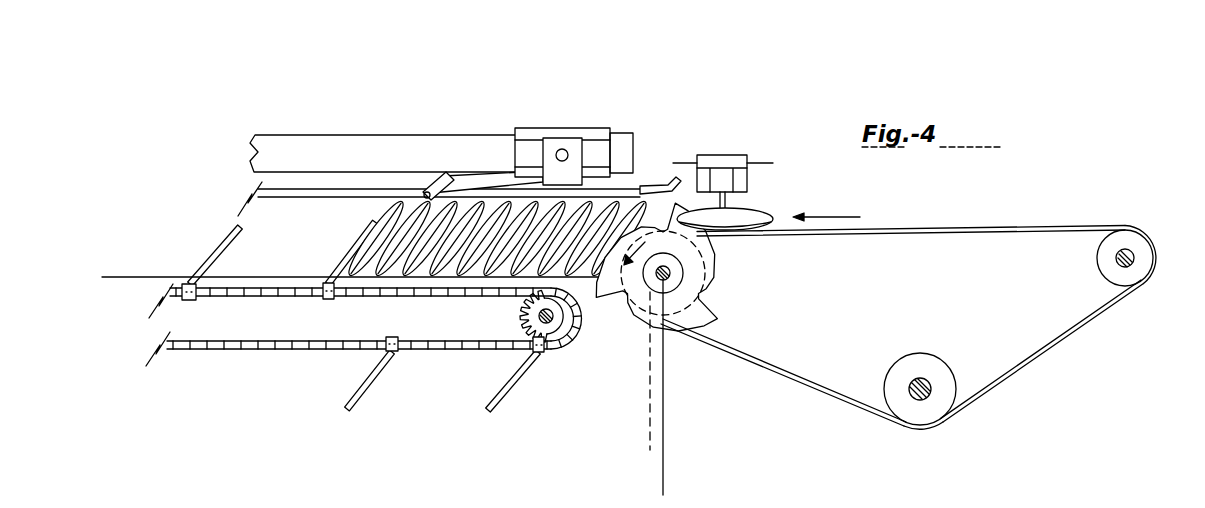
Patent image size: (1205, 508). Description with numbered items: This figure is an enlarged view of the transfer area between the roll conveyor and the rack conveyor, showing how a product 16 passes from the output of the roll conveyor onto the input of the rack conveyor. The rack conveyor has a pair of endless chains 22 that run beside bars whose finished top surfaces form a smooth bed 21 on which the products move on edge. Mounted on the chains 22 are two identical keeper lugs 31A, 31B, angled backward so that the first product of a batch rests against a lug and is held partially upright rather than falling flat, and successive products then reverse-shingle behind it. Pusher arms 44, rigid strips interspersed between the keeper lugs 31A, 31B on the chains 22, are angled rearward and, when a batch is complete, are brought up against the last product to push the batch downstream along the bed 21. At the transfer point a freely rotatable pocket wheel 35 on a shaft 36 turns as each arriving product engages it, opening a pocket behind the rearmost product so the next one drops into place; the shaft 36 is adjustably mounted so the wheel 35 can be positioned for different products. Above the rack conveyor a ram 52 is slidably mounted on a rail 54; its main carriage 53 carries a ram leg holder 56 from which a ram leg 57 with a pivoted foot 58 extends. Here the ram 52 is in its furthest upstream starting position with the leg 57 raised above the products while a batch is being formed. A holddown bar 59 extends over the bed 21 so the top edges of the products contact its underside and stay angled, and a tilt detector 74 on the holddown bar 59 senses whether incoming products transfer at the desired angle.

The product 16 is at (772, 210).
The bed 21 is at (120, 277).
The endless chains 22 is at (242, 350).
The keeper lug 31A is at (330, 265).
The keeper lug 31B is at (378, 385).
The pocket wheel 35 is at (704, 349).
The shaft 36 is at (670, 271).
The pusher arms 44 is at (213, 251).
The ram 52 is at (594, 110).
The main carriage 53 is at (525, 128).
The rail 54 is at (305, 135).
The ram leg holder 56 is at (583, 158).
The ram leg 57 is at (480, 178).
The foot 58 is at (426, 189).
The holddown bar 59 is at (284, 189).
The tilt detector 74 is at (661, 178).